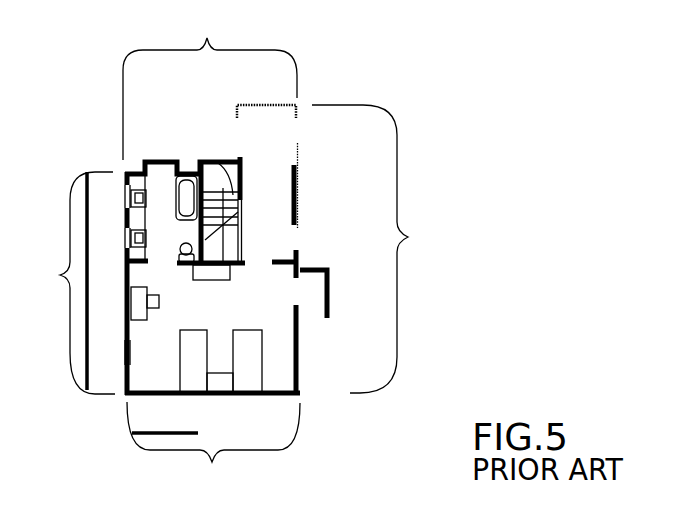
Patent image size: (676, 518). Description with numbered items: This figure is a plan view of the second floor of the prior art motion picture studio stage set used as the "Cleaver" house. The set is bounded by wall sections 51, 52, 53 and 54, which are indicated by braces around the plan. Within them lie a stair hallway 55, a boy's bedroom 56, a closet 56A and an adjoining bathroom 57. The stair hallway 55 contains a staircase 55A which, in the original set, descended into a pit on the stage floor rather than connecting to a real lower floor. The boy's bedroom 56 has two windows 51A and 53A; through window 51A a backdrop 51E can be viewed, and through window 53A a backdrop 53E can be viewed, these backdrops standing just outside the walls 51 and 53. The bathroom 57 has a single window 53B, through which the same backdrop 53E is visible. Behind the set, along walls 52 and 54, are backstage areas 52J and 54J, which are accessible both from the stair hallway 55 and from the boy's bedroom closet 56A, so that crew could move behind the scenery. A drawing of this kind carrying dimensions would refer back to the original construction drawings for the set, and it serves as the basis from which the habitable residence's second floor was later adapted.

The wall 51 is at (213, 449).
The window 51A is at (155, 398).
The backdrop 51E is at (203, 433).
The wall 52 is at (383, 249).
The backstage area 52J is at (297, 166).
The wall 53 is at (65, 283).
The window 53A is at (123, 352).
The window 53B is at (121, 218).
The backdrop 53E is at (90, 195).
The wall 54 is at (210, 85).
The backstage area 54J is at (182, 146).
The stair hallway 55 is at (230, 218).
The staircase 55A is at (228, 217).
The boy's bedroom 56 is at (196, 339).
The closet 56A is at (299, 322).
The bathroom 57 is at (161, 218).